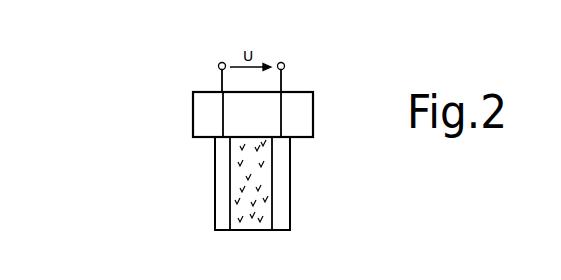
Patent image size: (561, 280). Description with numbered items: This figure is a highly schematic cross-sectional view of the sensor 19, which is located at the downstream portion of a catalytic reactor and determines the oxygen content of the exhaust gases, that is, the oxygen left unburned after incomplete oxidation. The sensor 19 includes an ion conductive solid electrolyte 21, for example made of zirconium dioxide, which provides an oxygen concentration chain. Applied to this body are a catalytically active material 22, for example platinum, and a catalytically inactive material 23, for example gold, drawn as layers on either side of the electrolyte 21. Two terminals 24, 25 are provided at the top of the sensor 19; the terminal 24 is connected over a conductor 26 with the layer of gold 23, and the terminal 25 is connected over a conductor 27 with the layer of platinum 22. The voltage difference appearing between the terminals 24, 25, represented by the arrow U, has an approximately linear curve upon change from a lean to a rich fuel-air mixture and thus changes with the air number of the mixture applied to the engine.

The sensor element 19 is at (317, 92).
The ion conductive solid electrolyte 21 is at (250, 223).
The catalytically active material 22 is at (288, 195).
The catalytically inactive material 23 is at (222, 181).
The terminal 24 is at (220, 63).
The terminal 25 is at (281, 62).
The conductor 26 is at (222, 117).
The conductor 27 is at (283, 116).